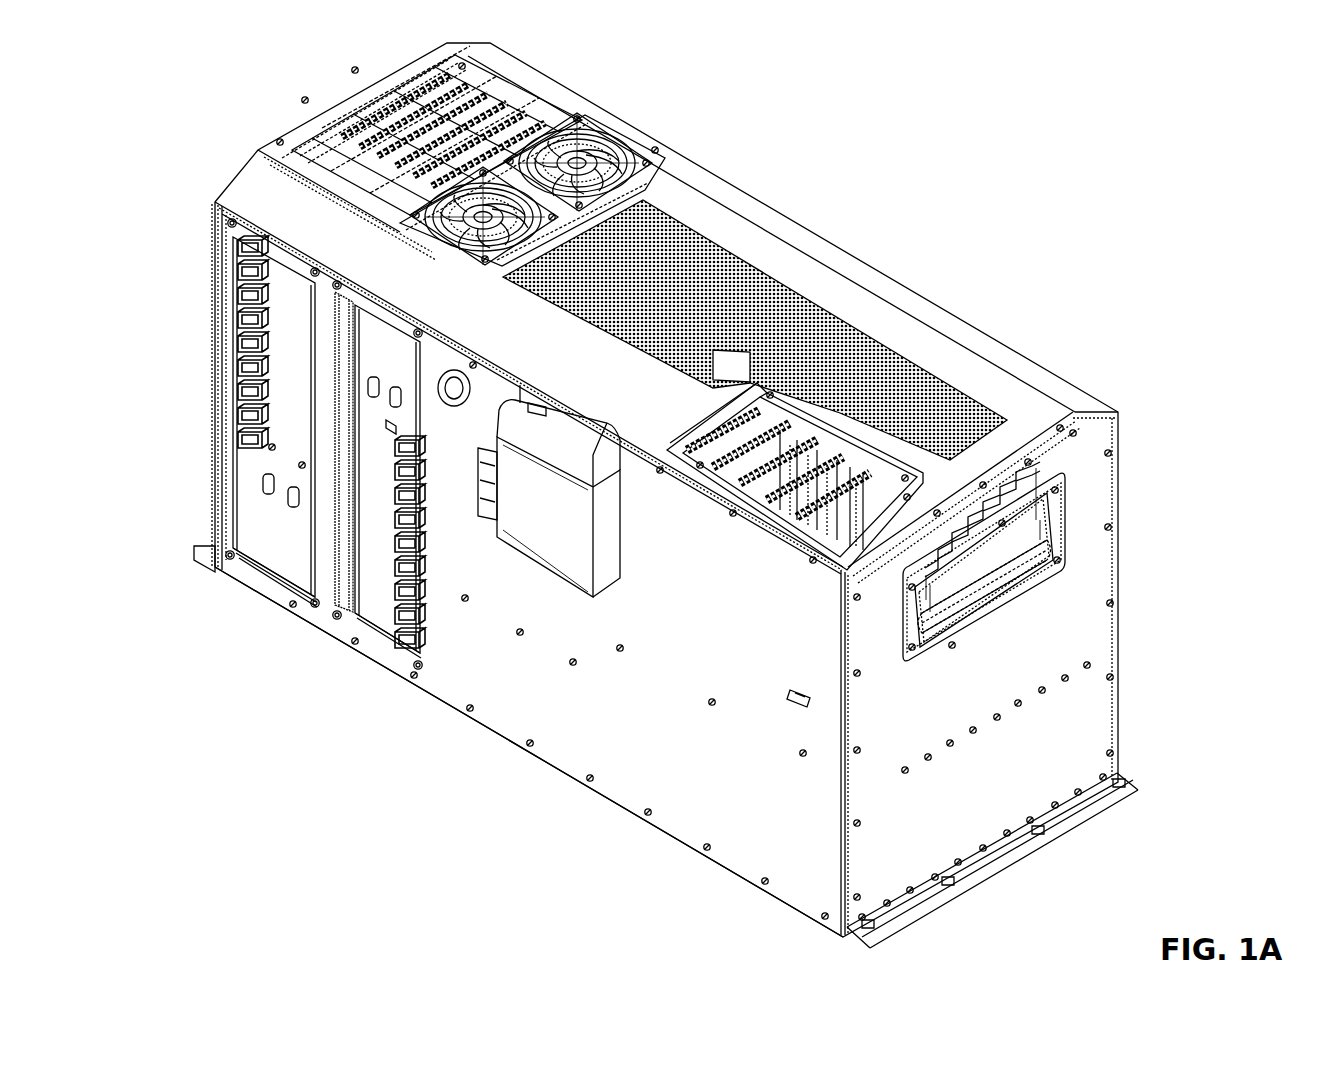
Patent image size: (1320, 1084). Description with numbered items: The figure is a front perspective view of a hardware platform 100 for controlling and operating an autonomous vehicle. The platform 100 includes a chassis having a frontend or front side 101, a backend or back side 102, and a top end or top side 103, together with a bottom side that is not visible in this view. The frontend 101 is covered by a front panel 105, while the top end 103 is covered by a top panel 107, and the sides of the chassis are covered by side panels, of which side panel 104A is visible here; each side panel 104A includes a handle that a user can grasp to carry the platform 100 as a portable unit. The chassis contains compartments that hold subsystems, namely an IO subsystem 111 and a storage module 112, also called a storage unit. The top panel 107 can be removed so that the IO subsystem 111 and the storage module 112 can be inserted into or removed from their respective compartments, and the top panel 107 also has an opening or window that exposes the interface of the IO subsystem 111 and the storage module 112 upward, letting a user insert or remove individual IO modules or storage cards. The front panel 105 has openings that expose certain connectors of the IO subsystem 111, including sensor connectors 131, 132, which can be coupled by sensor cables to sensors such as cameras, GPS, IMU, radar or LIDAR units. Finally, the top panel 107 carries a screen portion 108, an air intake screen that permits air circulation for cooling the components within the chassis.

The platform 100 is at (738, 490).
The frontend 101 is at (405, 745).
The backend 102 is at (913, 187).
The top end 103 is at (1003, 407).
The side panel 104A is at (1024, 795).
The front panel 105 is at (728, 810).
The top panel 107 is at (252, 182).
The screen portion 108 is at (665, 247).
The IO subsystem 111 is at (266, 523).
The storage module 112 is at (797, 465).
The sensor connector 131 is at (237, 330).
The sensor connector 132 is at (409, 601).